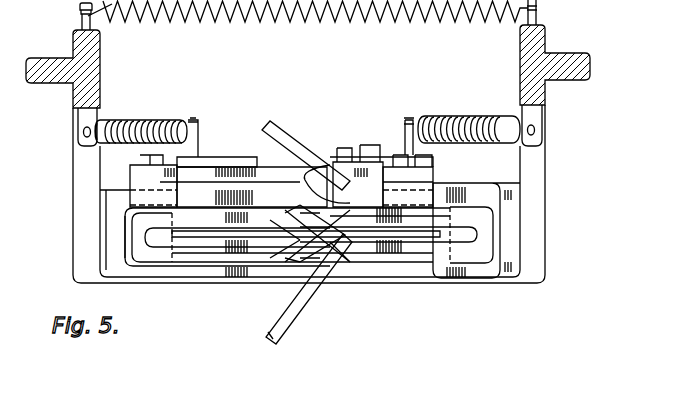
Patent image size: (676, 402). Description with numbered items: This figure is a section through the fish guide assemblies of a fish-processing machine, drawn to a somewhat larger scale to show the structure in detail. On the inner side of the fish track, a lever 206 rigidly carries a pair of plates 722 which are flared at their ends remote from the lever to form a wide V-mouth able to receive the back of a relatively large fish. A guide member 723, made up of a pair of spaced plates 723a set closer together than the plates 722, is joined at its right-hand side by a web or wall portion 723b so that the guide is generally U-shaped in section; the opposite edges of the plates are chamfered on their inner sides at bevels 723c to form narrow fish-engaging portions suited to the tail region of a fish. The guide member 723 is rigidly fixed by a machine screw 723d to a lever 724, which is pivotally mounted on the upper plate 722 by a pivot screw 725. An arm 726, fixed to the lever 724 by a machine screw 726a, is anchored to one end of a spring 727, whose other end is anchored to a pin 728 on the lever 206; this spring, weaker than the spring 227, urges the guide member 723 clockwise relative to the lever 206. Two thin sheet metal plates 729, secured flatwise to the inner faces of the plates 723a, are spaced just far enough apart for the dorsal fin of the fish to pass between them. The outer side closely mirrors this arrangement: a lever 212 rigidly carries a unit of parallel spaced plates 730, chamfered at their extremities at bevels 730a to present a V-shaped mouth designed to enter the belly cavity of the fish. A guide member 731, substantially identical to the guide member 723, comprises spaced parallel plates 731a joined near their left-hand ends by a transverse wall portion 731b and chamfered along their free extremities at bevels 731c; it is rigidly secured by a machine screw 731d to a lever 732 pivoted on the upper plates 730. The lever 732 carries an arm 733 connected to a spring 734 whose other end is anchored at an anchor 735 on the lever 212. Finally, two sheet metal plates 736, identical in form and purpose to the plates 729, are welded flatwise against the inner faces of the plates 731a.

The lever 206 is at (584, 70).
The lever 212 is at (46, 78).
The spring 227 is at (82, 27).
The pair of plates 722 is at (266, 122).
The guide member 723 is at (442, 260).
The plates 723a is at (430, 258).
The web or wall portion 723b is at (485, 234).
The bevels 723c is at (322, 252).
The machine screw 723d is at (406, 153).
The lever 724 is at (365, 168).
The pivot screw 725 is at (340, 160).
The arm 726 is at (432, 160).
The machine screw 726a is at (357, 147).
The spring 727 is at (473, 119).
The pin 728 is at (538, 130).
The sheet metal plates 729 is at (412, 250).
The pair of parallel spaced plates 730 is at (221, 187).
The bevels 730a is at (330, 165).
The guide member 731 is at (205, 232).
The plates 731a is at (166, 258).
The wall portion 731b is at (143, 239).
The bevels 731c is at (312, 253).
The machine screw 731d is at (140, 162).
The lever 732 is at (205, 165).
The arm 733 is at (220, 180).
The spring 734 is at (131, 119).
The anchor 735 is at (80, 138).
The sheet metal plates 736 is at (198, 242).